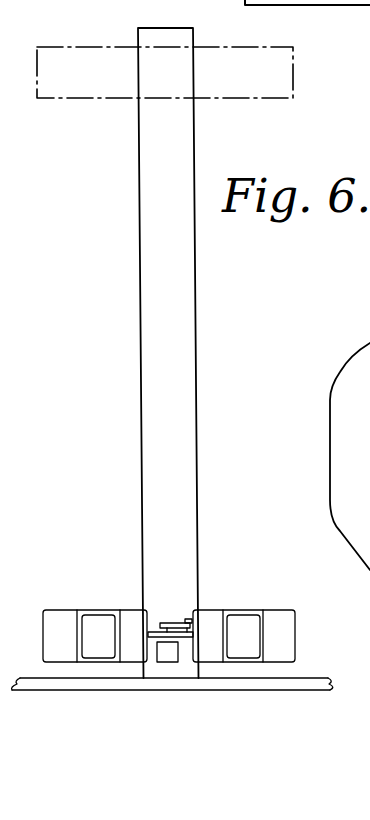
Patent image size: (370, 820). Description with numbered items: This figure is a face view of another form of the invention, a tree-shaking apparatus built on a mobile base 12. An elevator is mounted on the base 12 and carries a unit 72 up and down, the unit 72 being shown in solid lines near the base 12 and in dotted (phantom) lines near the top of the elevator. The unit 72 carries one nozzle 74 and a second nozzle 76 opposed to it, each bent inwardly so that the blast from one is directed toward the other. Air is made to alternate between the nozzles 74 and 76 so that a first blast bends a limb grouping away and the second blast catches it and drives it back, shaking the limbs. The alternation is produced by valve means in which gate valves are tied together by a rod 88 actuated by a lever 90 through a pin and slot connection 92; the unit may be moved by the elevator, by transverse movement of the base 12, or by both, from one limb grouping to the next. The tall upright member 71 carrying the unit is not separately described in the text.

The mobile base 12 is at (75, 683).
The column 71 is at (142, 353).
The unit 72 is at (240, 99).
The nozzle 74 is at (245, 612).
The second nozzle 76 is at (90, 607).
The rod 88 is at (172, 638).
The lever 90 is at (180, 622).
The pin and slot connection 92 is at (188, 621).